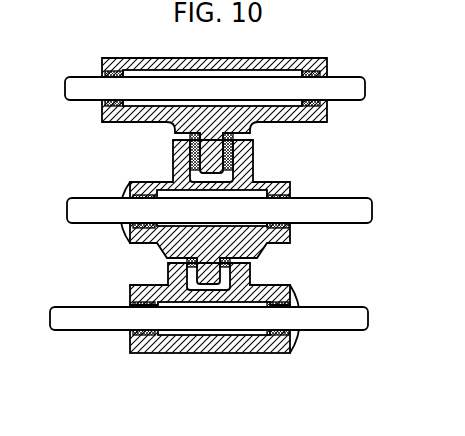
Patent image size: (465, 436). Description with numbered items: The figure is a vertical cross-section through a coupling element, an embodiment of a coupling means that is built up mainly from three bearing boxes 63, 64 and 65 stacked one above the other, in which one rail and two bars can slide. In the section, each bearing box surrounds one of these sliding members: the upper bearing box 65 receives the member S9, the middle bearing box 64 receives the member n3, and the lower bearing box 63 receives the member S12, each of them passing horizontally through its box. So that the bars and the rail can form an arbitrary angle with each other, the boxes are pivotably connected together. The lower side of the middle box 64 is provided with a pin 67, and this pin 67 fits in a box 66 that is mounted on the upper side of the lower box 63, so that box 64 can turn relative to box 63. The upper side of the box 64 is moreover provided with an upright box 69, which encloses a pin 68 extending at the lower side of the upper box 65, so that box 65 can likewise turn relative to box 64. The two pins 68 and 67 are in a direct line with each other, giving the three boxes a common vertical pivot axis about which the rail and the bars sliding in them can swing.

The bearing box 63 is at (130, 355).
The bearing box 64 is at (137, 235).
The bearing box 65 is at (113, 62).
The box 66 is at (237, 275).
The pin 67 is at (187, 263).
The pin 68 is at (212, 152).
The upright box 69 is at (175, 150).
The shaft S9 is at (346, 85).
The shaft n3 is at (328, 208).
The shaft S12 is at (333, 313).